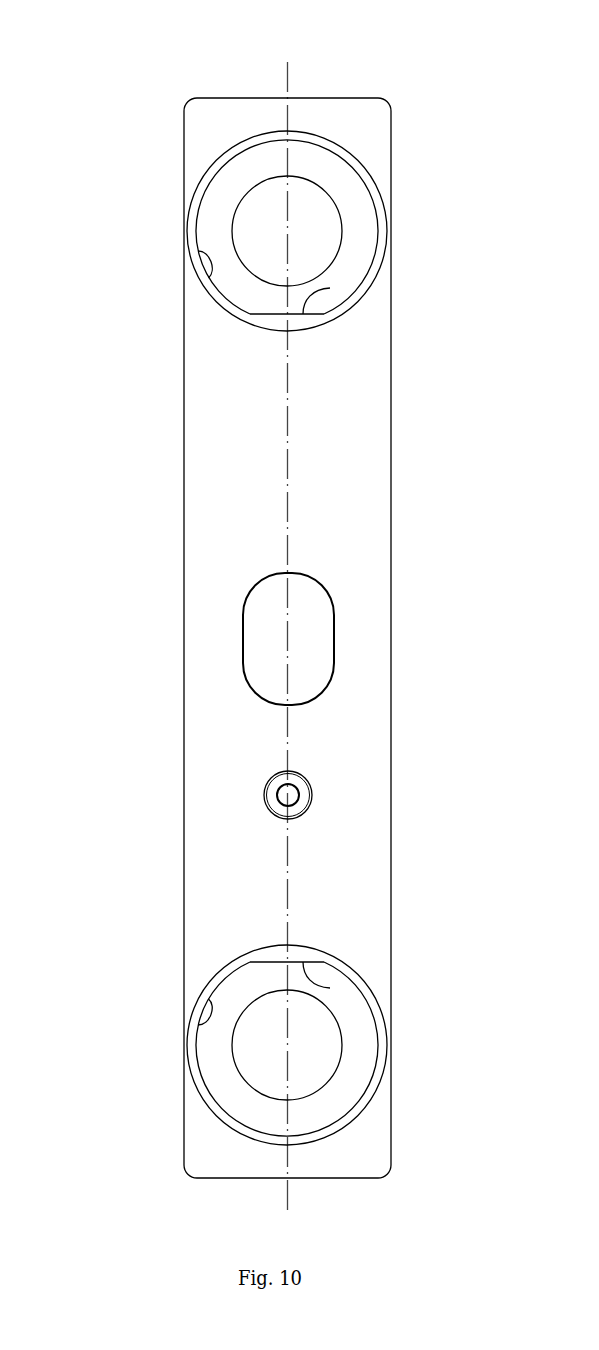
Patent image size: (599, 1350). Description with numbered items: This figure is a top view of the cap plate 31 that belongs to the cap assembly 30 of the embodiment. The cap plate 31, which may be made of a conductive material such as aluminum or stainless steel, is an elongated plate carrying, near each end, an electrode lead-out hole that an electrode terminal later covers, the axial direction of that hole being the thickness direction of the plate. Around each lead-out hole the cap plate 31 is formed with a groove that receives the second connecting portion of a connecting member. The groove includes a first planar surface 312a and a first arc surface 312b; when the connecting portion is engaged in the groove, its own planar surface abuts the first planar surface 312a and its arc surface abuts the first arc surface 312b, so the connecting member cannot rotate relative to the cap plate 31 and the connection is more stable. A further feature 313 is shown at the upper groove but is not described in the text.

The cap assembly 30 is at (327, 40).
The cap plate 31 is at (213, 537).
The first planar surface 312a is at (330, 988).
The first arc surface 312b is at (198, 251).
The notch of upper ring 313 is at (330, 288).